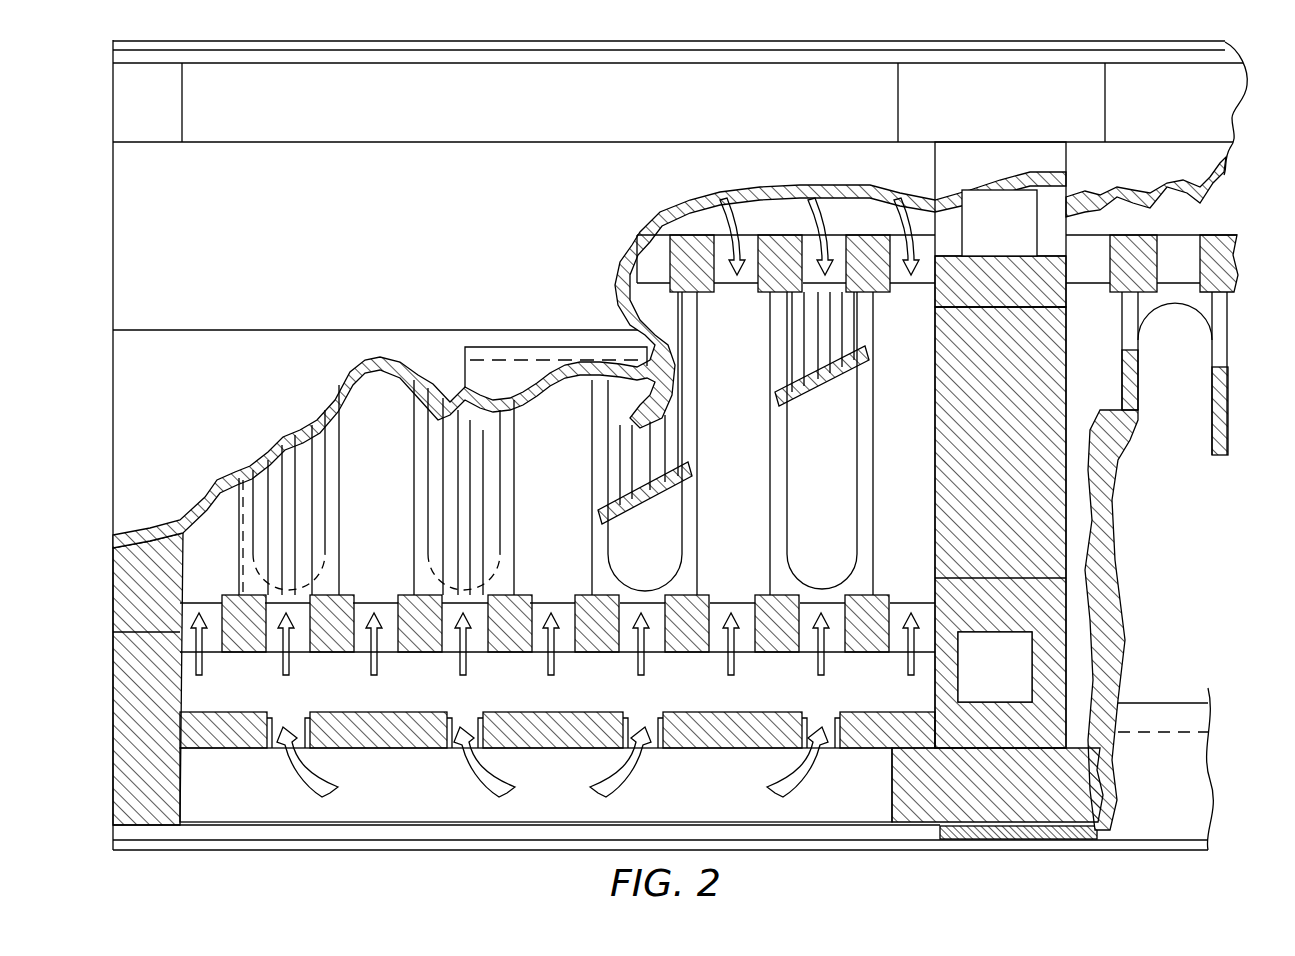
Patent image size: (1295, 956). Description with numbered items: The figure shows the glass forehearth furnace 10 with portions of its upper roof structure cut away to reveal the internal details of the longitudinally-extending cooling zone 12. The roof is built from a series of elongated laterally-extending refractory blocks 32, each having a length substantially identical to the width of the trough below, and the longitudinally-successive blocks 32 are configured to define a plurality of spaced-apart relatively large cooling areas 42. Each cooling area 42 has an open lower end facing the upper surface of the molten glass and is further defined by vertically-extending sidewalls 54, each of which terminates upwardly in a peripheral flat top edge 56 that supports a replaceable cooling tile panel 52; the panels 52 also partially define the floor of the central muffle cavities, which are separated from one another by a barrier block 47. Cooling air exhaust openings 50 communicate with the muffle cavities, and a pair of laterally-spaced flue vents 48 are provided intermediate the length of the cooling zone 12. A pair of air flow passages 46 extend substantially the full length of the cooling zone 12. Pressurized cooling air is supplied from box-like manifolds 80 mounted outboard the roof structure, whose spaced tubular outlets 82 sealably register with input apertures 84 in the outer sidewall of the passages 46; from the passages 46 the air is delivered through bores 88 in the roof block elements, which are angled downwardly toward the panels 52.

The glass forehearth furnace 10 is at (262, 866).
The cooling zone 12 is at (1205, 510).
The refractory blocks 32 is at (692, 558).
The cooling areas 42 is at (733, 443).
The air flow passages 46 is at (790, 230).
The barrier block 47 is at (1000, 445).
The flue vents 48 is at (997, 446).
The cooling air exhaust openings 50 is at (583, 372).
The cooling tile panels 52 is at (613, 457).
The sidewalls 54 is at (681, 537).
The top edge 56 is at (1214, 322).
The manifolds 80 is at (641, 785).
The tubular outlets 82 is at (278, 716).
The input apertures 84 is at (296, 714).
The bores 88 is at (662, 253).